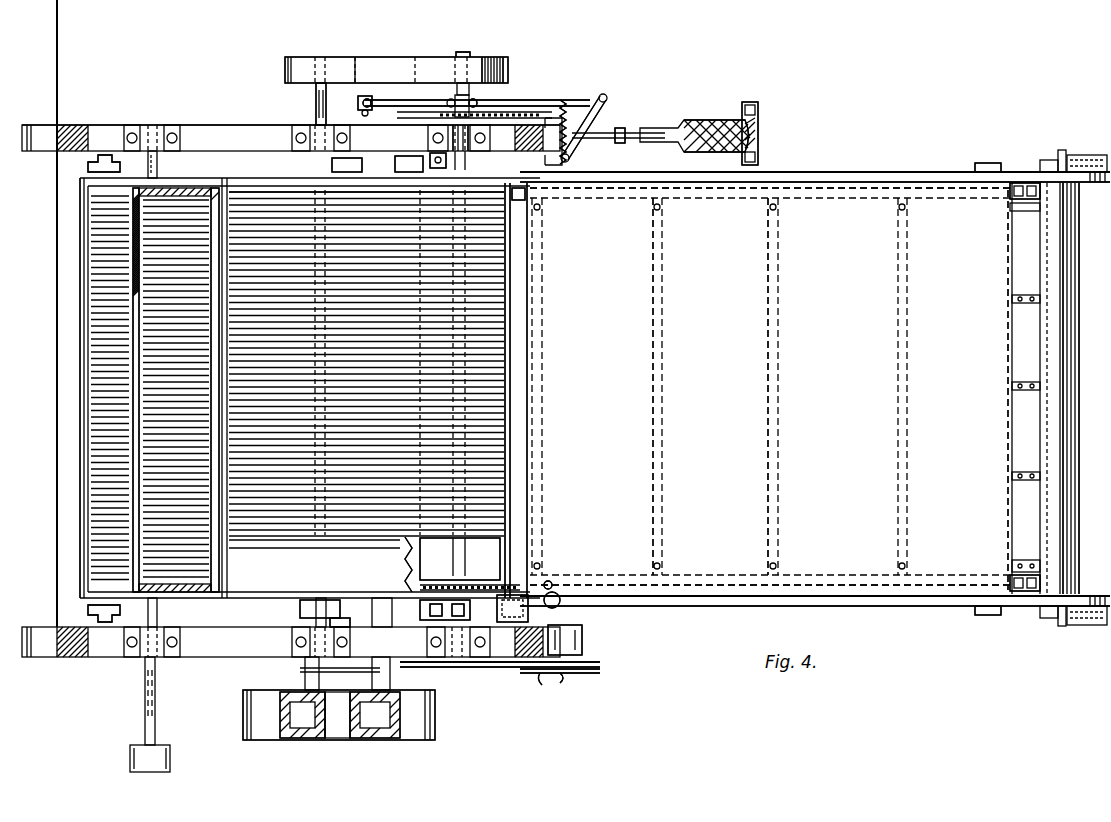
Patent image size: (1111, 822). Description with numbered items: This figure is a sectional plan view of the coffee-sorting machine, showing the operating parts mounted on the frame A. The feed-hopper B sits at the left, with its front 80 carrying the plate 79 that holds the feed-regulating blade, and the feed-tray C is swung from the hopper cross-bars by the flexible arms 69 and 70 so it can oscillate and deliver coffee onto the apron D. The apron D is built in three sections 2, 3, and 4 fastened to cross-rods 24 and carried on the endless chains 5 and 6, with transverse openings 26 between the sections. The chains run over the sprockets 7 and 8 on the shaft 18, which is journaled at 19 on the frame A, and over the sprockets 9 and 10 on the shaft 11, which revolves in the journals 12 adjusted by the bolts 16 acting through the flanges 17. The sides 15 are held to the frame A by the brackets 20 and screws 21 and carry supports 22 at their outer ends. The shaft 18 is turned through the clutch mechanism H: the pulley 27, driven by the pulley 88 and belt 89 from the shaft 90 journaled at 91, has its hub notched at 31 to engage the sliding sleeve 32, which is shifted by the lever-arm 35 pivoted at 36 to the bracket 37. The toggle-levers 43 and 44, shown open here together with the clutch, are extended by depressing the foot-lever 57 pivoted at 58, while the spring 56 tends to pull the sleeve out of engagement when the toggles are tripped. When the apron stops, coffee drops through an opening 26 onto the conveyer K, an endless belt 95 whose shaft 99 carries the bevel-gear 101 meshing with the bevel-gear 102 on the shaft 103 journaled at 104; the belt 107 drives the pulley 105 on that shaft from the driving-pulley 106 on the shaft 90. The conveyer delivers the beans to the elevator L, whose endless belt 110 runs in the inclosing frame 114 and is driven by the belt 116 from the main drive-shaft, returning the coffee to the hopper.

The pulley 88 is at (312, 57).
The belt 89 is at (340, 57).
The shaft 90 is at (318, 105).
The journal 91 is at (300, 134).
The flexible arm 70 is at (103, 160).
The frame A is at (202, 125).
The pivot 36 is at (370, 99).
The lever-arm 35 is at (398, 100).
The notch 31 is at (463, 52).
The pulley 27 is at (490, 57).
The sliding sleeve 32 is at (477, 103).
The clutch mechanism H is at (480, 102).
The bracket 37 is at (358, 104).
The journal 19 is at (452, 134).
The shaft 18 is at (455, 160).
The flexible arm 69 is at (330, 163).
The bracket 20 is at (425, 170).
The sprocket 7 is at (480, 200).
The spring 56 is at (566, 120).
The toggle-lever 43 is at (600, 118).
The toggle-lever 44 is at (625, 132).
The foot-lever 57 is at (706, 120).
The pivot 58 is at (758, 114).
The endless chain 5 is at (822, 185).
The side 15 is at (889, 176).
The support 22 is at (989, 164).
The sprocket 9 is at (1034, 184).
The journal 12 is at (1047, 160).
The flange 17 is at (1064, 156).
The bolt 16 is at (1092, 155).
The feed-hopper B is at (80, 295).
The front of hopper 80 is at (220, 362).
The transverse opening 26 is at (520, 360).
The feed-tray C is at (505, 440).
The apron D is at (771, 386).
The apron section 2 is at (907, 390).
The cross-rod 24 is at (663, 455).
The apron section 4 is at (1079, 358).
The shaft 11 is at (1068, 435).
The endless belt 95 is at (525, 540).
The bevel-gear 101 is at (552, 583).
The shaft 99 is at (560, 596).
The apron section 3 is at (420, 564).
The sprocket 8 is at (472, 576).
The bevel-gear 102 is at (560, 612).
The journal 104 is at (584, 642).
The endless chain 6 is at (736, 600).
The sprocket 10 is at (1034, 596).
The driving-pulley 106 is at (310, 626).
The screw 21 is at (428, 642).
The conveyer K is at (512, 622).
The shaft 103 is at (562, 670).
The pulley 105 is at (540, 674).
The belt 107 is at (520, 672).
The plate 79 is at (222, 600).
The inclosing frame 114 is at (298, 740).
The elevator L is at (345, 740).
The endless belt 110 is at (362, 740).
The belt 116 is at (342, 715).